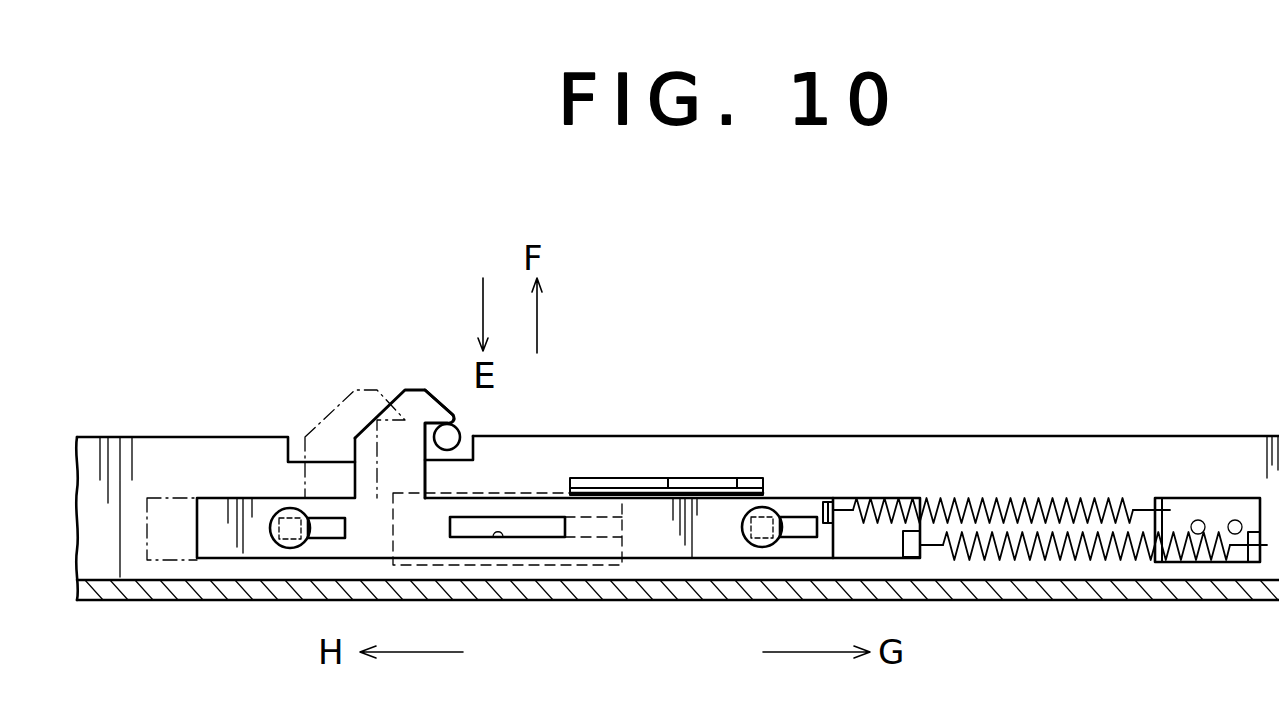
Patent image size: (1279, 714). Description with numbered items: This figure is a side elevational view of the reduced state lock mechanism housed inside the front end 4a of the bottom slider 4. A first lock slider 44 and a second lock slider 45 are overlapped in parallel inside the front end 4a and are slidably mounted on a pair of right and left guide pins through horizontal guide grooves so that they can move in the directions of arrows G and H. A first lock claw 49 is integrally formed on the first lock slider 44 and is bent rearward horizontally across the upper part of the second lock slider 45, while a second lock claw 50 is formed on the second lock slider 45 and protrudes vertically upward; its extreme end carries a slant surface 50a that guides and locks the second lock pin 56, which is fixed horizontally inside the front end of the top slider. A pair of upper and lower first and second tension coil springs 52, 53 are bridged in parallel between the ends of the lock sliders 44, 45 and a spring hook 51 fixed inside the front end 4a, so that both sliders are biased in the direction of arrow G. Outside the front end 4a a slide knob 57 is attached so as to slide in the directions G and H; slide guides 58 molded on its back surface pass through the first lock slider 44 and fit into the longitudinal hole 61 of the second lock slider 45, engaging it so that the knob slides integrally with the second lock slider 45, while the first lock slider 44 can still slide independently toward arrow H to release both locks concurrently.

The bottom slider 4 is at (635, 620).
The front end of the bottom slider 4a is at (912, 434).
The first lock slider 44 is at (898, 552).
The second lock slider 45 is at (710, 547).
The first lock claw 49 is at (698, 478).
The second lock claw 50 is at (405, 390).
The slant surface 50a is at (440, 412).
The spring hook 51 is at (1210, 507).
The first tension coil spring 52 is at (1113, 550).
The second tension coil spring 53 is at (1008, 498).
The second lock pin 56 is at (451, 436).
The slide knob 57 is at (547, 490).
The slide guides 58 is at (550, 530).
The longitudinal hole 61 is at (498, 530).